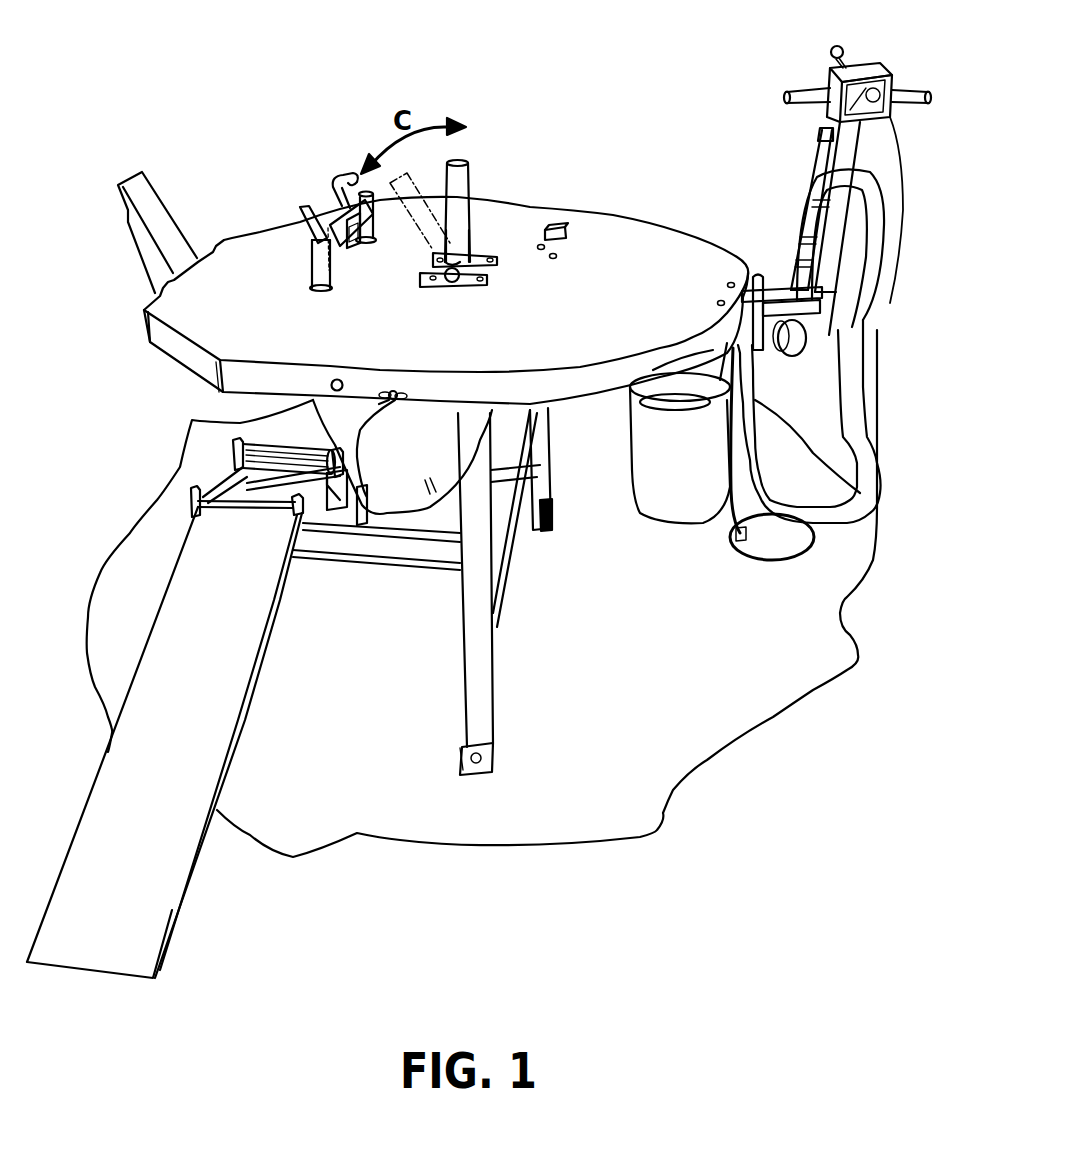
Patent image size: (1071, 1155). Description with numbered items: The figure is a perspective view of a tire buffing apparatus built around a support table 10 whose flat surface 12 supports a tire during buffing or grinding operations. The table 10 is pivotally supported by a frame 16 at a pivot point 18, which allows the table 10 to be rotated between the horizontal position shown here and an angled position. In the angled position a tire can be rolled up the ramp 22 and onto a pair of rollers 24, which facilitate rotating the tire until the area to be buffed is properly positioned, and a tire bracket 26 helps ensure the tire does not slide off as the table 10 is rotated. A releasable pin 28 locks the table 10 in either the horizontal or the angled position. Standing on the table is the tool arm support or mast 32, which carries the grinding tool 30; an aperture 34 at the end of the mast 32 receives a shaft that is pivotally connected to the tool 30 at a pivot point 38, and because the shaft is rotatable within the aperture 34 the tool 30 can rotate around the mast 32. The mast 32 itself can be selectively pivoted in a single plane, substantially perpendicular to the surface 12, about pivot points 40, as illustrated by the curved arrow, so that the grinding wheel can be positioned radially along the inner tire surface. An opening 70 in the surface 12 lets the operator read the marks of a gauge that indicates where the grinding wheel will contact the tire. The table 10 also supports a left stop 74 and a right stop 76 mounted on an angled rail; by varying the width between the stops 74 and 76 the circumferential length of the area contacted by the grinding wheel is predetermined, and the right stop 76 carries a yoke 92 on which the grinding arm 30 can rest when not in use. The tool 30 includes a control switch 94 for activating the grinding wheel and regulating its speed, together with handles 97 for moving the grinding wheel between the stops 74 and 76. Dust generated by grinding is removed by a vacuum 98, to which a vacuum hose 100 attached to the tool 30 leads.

The support table 10 is at (207, 320).
The flat surface 12 is at (610, 258).
The frame 16 is at (477, 717).
The pivot point 18 is at (335, 378).
The ramp 22 is at (92, 925).
The rollers 24 is at (253, 437).
The tire bracket 26 is at (142, 187).
The releasable pin 28 is at (395, 390).
The tool 30 is at (817, 180).
The mast 32 is at (460, 223).
The aperture 34 is at (451, 150).
The pivot point 38 is at (822, 130).
The pivot points 40 is at (447, 288).
The opening 70 is at (558, 225).
The left stop 74 is at (300, 227).
The right stop 76 is at (333, 187).
The yoke 92 is at (347, 175).
The control switch 94 is at (832, 53).
The handles 97 is at (917, 90).
The vacuum 98 is at (670, 483).
The vacuum hose 100 is at (853, 410).